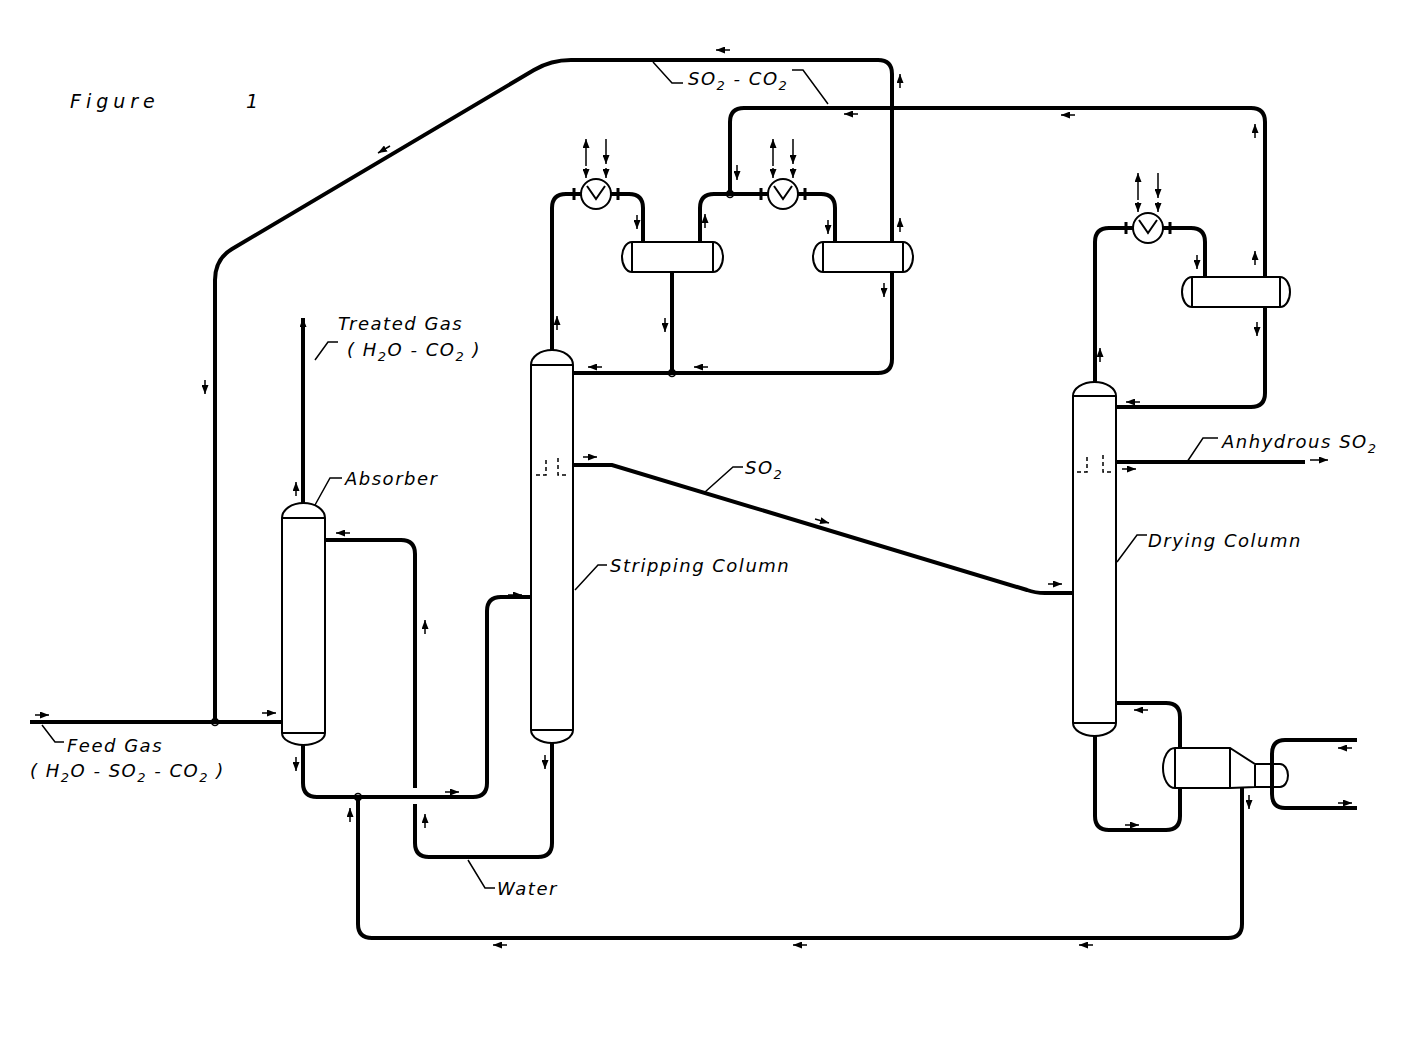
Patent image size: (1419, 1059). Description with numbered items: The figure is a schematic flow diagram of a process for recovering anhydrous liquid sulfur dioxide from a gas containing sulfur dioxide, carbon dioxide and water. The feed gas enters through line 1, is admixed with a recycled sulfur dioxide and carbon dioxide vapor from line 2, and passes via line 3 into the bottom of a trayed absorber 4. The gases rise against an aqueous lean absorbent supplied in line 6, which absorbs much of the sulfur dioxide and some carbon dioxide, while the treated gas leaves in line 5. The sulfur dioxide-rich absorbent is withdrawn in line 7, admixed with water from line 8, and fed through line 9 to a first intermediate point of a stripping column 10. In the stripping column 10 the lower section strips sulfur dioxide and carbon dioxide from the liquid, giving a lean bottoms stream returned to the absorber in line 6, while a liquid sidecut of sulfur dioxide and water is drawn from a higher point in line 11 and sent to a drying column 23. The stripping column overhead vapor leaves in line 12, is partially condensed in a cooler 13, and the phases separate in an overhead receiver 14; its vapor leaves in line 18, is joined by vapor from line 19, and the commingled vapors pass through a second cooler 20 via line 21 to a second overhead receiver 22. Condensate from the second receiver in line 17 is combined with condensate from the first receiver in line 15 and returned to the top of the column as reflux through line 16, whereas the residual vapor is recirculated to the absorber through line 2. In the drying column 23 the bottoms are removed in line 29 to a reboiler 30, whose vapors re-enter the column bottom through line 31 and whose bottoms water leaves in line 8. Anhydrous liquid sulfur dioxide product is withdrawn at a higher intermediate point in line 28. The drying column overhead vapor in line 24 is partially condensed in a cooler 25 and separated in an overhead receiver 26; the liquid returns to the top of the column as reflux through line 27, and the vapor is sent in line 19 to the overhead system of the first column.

The line 1 is at (122, 704).
The line 2 is at (551, 386).
The line 3 is at (248, 704).
The trayed absorber 4 is at (326, 624).
The line 5 is at (276, 410).
The line 6 is at (460, 680).
The line 7 is at (327, 771).
The line 8 is at (778, 866).
The line 9 is at (444, 693).
The stripping column 10 is at (584, 546).
The line 11 is at (823, 525).
The line 12 is at (592, 272).
The cooler 13 is at (572, 174).
The overhead receiver 14 is at (659, 274).
The line 15 is at (698, 322).
The line 16 is at (622, 390).
The line 17 is at (811, 342).
The line 18 is at (734, 218).
The line 19 is at (1001, 238).
The second cooler 20 is at (802, 174).
The line 21 is at (841, 218).
The second overhead receiver 22 is at (851, 274).
The drying column 23 is at (1124, 559).
The line 24 is at (1147, 305).
The cooler 25 is at (1119, 208).
The overhead receiver 26 is at (1230, 313).
The reflux return line 27 is at (1183, 391).
The line 28 is at (1222, 476).
The line 29 is at (1110, 783).
The reboiler 30 is at (1225, 747).
The line 31 is at (1151, 707).